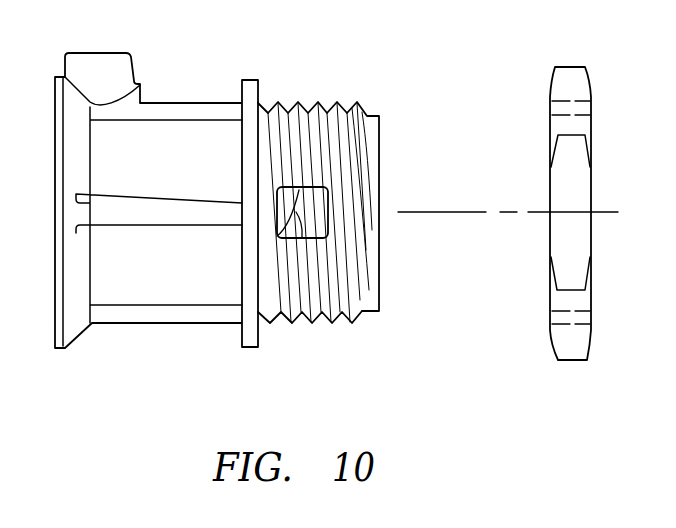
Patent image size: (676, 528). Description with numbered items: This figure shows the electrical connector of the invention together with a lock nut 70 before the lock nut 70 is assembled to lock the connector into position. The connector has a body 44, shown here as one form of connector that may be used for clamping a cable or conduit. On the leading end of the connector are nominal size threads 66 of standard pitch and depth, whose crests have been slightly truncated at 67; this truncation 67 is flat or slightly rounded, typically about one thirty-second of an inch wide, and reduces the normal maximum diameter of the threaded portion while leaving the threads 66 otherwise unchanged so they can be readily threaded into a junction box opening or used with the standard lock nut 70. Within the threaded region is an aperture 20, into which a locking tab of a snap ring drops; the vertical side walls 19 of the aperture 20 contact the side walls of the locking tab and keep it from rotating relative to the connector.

The body 44 is at (168, 102).
The truncation 67 is at (322, 103).
The threads 66 is at (333, 346).
The aperture 20 is at (320, 200).
The side walls 19 is at (277, 236).
The lock nut 70 is at (572, 66).